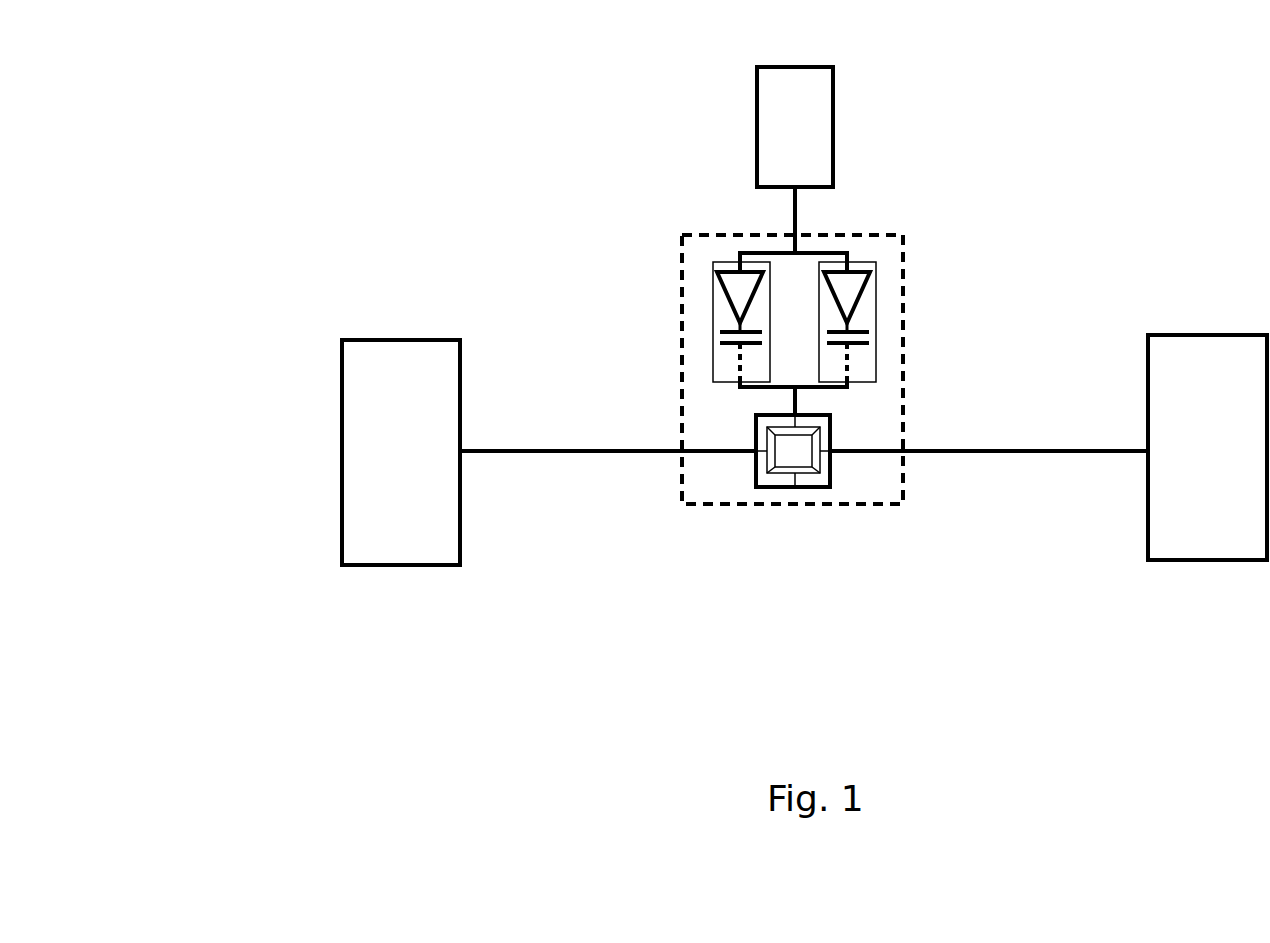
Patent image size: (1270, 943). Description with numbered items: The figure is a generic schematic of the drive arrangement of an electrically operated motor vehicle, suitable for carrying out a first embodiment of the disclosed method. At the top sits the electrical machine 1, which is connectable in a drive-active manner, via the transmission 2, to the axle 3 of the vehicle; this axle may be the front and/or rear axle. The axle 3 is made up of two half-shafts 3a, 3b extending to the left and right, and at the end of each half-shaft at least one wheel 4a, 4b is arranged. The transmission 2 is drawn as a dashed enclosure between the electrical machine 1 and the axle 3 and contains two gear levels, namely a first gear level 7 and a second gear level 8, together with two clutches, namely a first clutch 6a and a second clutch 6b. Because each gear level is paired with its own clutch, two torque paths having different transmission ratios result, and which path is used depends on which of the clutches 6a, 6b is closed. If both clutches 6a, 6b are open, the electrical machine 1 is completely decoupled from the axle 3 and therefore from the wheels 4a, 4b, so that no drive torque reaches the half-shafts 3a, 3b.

The electrical machine 1 is at (783, 137).
The transmission 2 is at (686, 229).
The axle 3 is at (326, 451).
The half-shaft 3a is at (623, 448).
The half-shaft 3b is at (968, 452).
The wheel 4a is at (395, 515).
The wheel 4b is at (1213, 515).
The first clutch 6a is at (728, 337).
The second clutch 6b is at (840, 338).
The first gear level 7 is at (633, 281).
The second gear level 8 is at (930, 284).